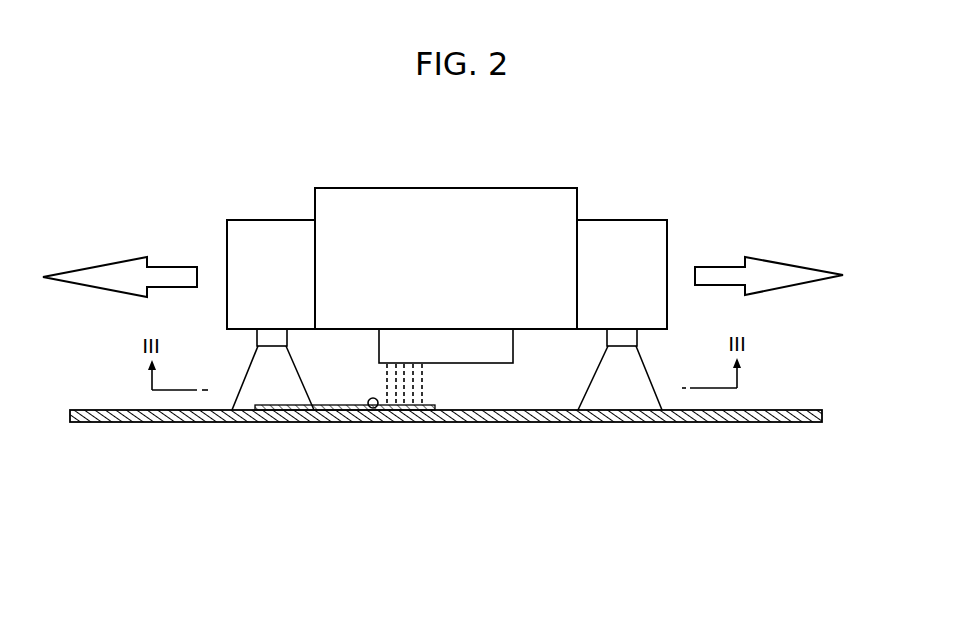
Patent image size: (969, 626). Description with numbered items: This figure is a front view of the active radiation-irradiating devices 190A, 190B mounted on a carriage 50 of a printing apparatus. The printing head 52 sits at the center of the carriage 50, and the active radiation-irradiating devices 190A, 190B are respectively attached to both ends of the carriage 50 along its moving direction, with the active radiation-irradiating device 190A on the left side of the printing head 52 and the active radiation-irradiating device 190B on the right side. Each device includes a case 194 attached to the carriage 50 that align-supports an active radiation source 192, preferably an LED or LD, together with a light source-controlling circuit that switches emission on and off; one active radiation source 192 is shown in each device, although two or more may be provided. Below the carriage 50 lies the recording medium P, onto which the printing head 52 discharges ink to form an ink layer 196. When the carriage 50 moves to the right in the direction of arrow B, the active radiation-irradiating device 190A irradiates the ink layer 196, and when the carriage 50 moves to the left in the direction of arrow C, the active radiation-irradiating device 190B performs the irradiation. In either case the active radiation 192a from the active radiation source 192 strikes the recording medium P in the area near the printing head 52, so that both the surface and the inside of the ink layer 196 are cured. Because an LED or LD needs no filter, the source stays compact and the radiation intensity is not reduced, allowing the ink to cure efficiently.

The carriage 50 is at (500, 187).
The printing head 52 is at (483, 353).
The active radiation-irradiating device 190A is at (214, 247).
The active radiation-irradiating device 190B is at (679, 246).
The active radiation source 192 is at (288, 337).
The active radiation 192a is at (273, 393).
The case 194 is at (240, 218).
The ink layer 196 is at (375, 423).
The recording medium P is at (757, 423).
The arrow B is at (802, 265).
The arrow C is at (88, 267).